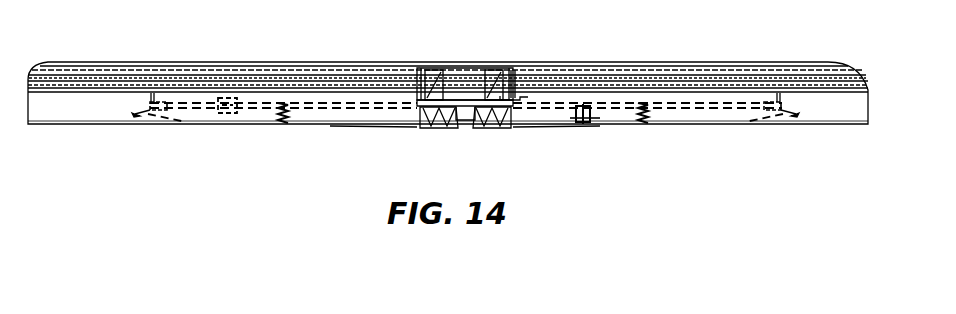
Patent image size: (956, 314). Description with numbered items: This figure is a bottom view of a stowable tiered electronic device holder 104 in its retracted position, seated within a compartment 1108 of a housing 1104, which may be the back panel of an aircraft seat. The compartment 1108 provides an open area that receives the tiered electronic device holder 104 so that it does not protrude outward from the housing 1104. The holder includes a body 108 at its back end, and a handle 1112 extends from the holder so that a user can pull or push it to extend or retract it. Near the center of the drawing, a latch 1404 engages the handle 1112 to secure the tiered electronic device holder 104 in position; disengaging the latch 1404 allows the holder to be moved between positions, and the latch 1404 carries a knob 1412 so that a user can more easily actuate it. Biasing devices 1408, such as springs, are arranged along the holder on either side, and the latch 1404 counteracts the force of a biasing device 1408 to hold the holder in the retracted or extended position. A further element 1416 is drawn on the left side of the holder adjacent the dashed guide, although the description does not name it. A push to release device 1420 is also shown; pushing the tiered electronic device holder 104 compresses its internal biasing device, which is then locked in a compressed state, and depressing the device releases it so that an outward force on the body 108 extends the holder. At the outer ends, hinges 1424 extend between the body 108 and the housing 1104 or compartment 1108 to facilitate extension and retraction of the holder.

The tiered electronic device holder 104 is at (330, 54).
The body 108 is at (190, 103).
The housing 1104 is at (612, 63).
The compartment 1108 is at (150, 108).
The handle 1112 is at (455, 100).
The latch 1404 is at (510, 88).
The biasing device 1408 is at (278, 112).
The knob 1412 is at (518, 98).
The block 1416 is at (217, 107).
The push to release device 1420 is at (590, 113).
The hinge 1424 is at (150, 118).